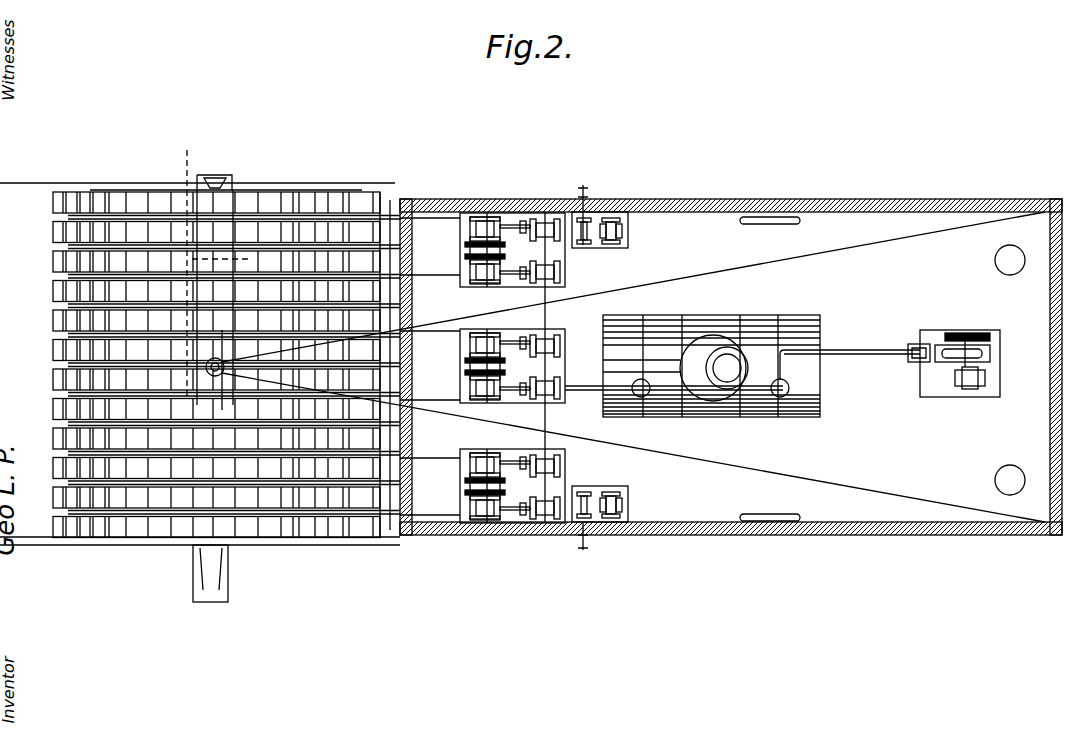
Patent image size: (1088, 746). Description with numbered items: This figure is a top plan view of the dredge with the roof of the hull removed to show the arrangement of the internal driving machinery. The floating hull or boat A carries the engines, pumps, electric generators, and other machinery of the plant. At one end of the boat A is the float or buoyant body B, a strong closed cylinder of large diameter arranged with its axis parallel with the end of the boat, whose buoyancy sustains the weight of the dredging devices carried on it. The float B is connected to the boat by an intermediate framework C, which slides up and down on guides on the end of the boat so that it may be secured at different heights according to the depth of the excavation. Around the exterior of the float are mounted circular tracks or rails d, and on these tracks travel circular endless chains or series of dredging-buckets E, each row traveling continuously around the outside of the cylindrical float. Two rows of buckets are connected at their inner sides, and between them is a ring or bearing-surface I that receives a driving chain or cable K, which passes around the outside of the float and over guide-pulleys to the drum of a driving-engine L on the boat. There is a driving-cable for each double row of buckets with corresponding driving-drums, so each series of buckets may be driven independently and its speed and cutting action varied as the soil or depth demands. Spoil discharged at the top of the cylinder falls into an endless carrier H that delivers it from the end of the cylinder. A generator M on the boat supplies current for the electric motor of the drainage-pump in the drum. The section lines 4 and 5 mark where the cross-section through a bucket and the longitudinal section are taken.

The floating hull or boat A is at (838, 200).
The float or buoyant body B is at (277, 190).
The intermediate framework C is at (388, 490).
The dredging-buckets E is at (52, 345).
The endless carrier H is at (212, 598).
The ring or bearing-surface I is at (65, 272).
The driving chain or cable K is at (446, 218).
The driving-engine L is at (500, 218).
The generator M is at (963, 333).
The circular tracks or rails d is at (68, 303).
The section line 4 4 is at (184, 265).
The section line 5 5 is at (218, 260).